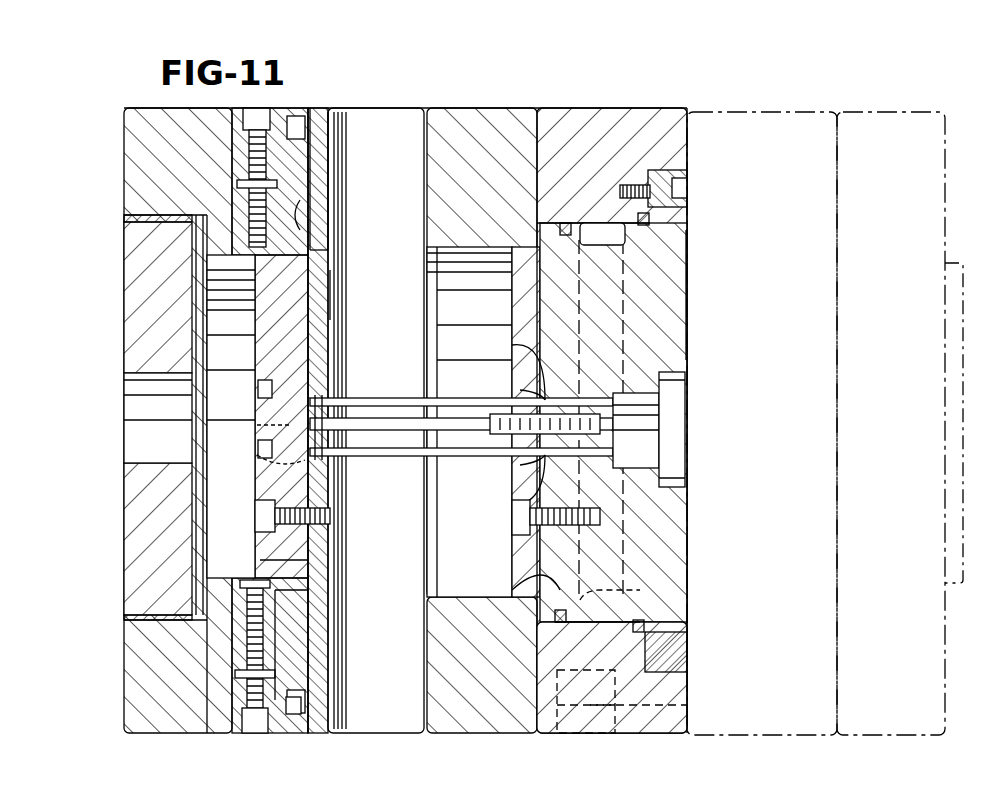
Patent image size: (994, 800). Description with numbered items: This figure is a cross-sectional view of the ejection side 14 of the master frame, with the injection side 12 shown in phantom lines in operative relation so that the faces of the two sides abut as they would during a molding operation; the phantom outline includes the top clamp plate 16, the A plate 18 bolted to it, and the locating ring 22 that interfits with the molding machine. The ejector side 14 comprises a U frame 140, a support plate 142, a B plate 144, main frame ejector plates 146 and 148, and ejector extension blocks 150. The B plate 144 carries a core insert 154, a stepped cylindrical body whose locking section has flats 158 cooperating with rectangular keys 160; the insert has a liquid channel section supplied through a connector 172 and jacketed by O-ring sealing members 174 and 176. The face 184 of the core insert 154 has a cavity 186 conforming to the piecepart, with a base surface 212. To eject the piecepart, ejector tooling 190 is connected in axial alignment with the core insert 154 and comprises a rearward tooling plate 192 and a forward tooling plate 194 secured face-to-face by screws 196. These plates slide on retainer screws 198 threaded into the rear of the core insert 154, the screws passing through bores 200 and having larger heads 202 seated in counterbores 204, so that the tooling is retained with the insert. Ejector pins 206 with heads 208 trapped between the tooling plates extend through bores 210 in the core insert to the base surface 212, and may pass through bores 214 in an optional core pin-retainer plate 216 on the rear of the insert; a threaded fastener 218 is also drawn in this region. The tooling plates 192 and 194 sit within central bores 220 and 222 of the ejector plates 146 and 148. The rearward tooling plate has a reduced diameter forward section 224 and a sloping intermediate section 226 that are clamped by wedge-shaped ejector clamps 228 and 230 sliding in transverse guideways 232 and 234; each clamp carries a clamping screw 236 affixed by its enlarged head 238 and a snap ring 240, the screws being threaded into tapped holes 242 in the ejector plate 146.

The injection side 12 is at (811, 108).
The ejection side 14 is at (358, 100).
The top clamp plate 16 is at (880, 110).
The A plate 18 is at (745, 112).
The locating ring 22 is at (958, 262).
The U frame 140 is at (135, 258).
The support plate 142 is at (483, 112).
The B plate 144 is at (580, 112).
The main frame ejector plate 146 is at (213, 734).
The main frame ejector plate 148 is at (318, 734).
The ejector extension block 150 is at (160, 107).
The core insert 154 is at (692, 256).
The flats 158 is at (690, 212).
The rectangular keys 160 is at (668, 185).
The connector 172 is at (690, 712).
The O-ring sealing member 174 is at (645, 612).
The O-ring sealing member 176 is at (530, 570).
The face of the core insert 184 is at (688, 298).
The cavity 186 is at (685, 380).
The ejector tooling 190 is at (376, 395).
The rearward tooling plate 192 is at (268, 320).
The forward tooling plate 194 is at (340, 296).
The screw 196 is at (330, 520).
The retainer screw 198 is at (392, 462).
The bore 200 is at (270, 456).
The head 202 is at (275, 435).
The counterbore 204 is at (275, 395).
The ejector pin 206 is at (412, 448).
The head 208 is at (300, 390).
The bore 210 is at (520, 355).
The base surface 212 is at (650, 445).
The bore 214 is at (520, 380).
The core pin-retainer plate 216 is at (513, 310).
The bolt 218 is at (512, 520).
The bore 220 is at (325, 236).
The bore 222 is at (320, 210).
The reduced diameter forward section 224 is at (300, 567).
The sloping intermediate section 226 is at (325, 602).
The ejector clamp 228 is at (322, 130).
The ejector clamp 230 is at (300, 703).
The guideway 232 is at (265, 108).
The guideway 234 is at (245, 735).
The clamping screw 236 is at (280, 158).
The enlarged head 238 is at (240, 108).
The snap ring 240 is at (280, 184).
The tapped hole 242 is at (250, 580).